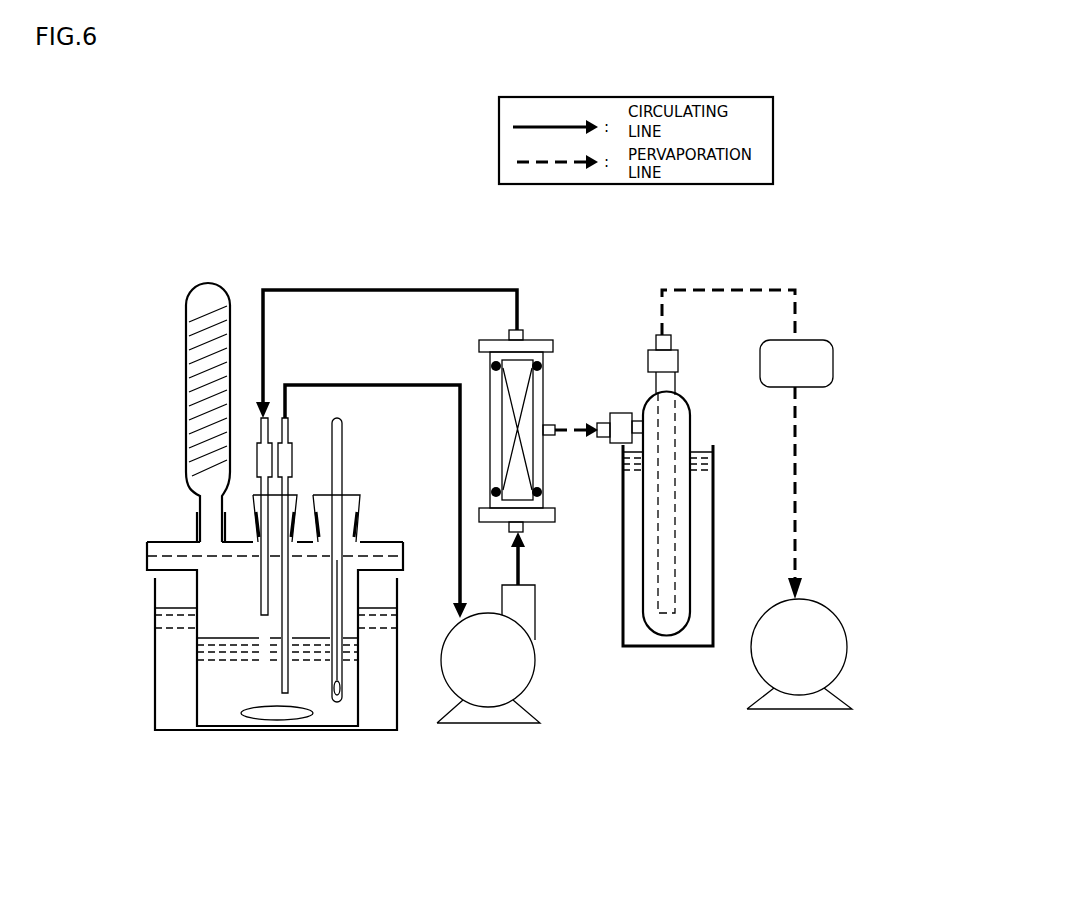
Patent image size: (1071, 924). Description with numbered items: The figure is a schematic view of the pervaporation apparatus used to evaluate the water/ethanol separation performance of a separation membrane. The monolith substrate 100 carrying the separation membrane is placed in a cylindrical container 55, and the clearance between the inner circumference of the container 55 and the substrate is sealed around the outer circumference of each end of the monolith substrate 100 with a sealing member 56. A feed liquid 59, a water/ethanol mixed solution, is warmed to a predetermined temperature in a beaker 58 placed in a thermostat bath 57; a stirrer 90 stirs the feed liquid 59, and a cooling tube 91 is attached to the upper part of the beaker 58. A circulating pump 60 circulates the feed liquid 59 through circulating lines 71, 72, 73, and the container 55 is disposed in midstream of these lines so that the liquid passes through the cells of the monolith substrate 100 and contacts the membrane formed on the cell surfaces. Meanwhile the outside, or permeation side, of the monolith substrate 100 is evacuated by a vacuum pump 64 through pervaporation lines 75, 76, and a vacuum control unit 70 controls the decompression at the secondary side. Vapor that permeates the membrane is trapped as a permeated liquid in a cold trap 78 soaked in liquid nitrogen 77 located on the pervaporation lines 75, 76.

The cylindrical container 55 is at (537, 342).
The sealing member 56 is at (542, 366).
The thermostat bath 57 is at (157, 730).
The beaker 58 is at (197, 675).
The feed liquid 59 is at (337, 712).
The circulating pump 60 is at (518, 675).
The vacuum pump 64 is at (840, 645).
The vacuum control unit 70 is at (833, 352).
The circulating line 71 is at (357, 385).
The circulating line 72 is at (518, 563).
The circulating line 73 is at (377, 290).
The pervaporation line 75 is at (568, 425).
The pervaporation line 76 is at (767, 288).
The liquid nitrogen 77 is at (698, 535).
The cold trap 78 is at (697, 472).
The stirrer 90 is at (267, 712).
The cooling tube 91 is at (186, 378).
The monolith substrate 100 is at (500, 397).